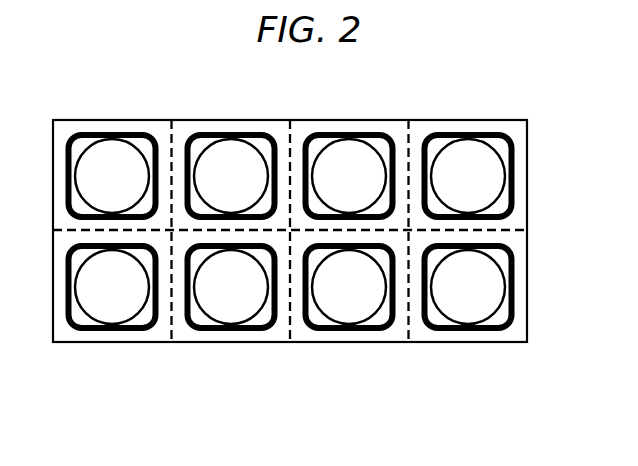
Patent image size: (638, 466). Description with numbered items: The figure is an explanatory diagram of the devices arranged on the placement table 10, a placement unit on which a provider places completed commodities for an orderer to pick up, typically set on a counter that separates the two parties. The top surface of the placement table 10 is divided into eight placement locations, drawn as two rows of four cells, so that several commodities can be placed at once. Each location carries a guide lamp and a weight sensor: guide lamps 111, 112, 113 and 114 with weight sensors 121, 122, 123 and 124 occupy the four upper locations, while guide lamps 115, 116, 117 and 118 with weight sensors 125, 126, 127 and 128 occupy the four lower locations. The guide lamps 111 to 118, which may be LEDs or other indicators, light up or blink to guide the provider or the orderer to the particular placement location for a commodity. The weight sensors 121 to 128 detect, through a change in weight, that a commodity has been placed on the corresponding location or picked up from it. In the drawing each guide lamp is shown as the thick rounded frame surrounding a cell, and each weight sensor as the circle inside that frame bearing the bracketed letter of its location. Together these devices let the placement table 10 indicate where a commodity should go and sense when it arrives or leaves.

The placement table 10 is at (528, 128).
The guide lamp 111 is at (79, 133).
The guide lamp 112 is at (198, 133).
The guide lamp 113 is at (316, 133).
The guide lamp 114 is at (435, 133).
The guide lamp 115 is at (132, 329).
The guide lamp 116 is at (251, 329).
The guide lamp 117 is at (369, 329).
The guide lamp 118 is at (488, 329).
The weight sensor 121 is at (113, 139).
The weight sensor 122 is at (232, 139).
The weight sensor 123 is at (350, 139).
The weight sensor 124 is at (469, 139).
The weight sensor 125 is at (112, 325).
The weight sensor 126 is at (231, 325).
The weight sensor 127 is at (349, 325).
The weight sensor 128 is at (468, 325).